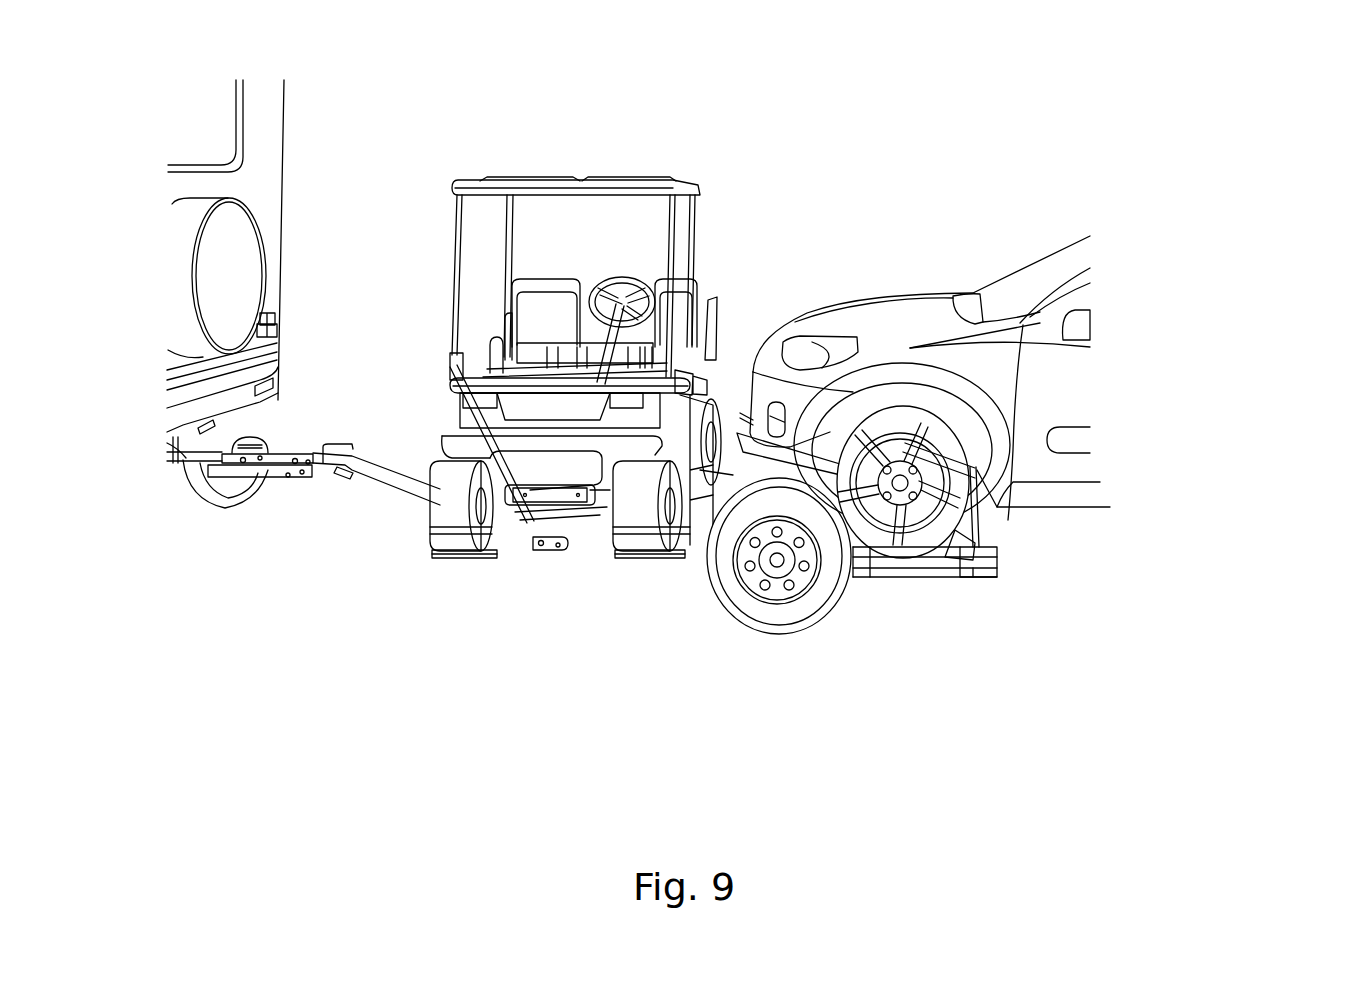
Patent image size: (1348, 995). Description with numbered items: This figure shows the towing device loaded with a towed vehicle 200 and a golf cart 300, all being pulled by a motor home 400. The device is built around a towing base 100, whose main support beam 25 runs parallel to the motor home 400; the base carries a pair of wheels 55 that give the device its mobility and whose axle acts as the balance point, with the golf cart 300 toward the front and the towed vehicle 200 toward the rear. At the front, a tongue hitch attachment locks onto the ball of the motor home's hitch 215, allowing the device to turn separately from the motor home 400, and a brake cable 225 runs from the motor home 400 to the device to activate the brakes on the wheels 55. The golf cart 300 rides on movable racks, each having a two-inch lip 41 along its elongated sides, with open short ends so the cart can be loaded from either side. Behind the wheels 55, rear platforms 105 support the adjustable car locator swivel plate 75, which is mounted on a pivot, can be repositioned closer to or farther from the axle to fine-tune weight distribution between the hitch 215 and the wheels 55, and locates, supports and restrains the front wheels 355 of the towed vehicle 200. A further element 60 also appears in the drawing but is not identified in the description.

The motor home 400 is at (262, 106).
The golf cart 300 is at (579, 193).
The towed vehicle 200 is at (1045, 376).
The main support beam 25 is at (305, 458).
The hitch 215 is at (200, 502).
The brake cable 225 is at (233, 507).
The lip 41 is at (465, 558).
The tongue 60 is at (703, 487).
The wheels 55 is at (777, 634).
The front wheels 355 is at (868, 577).
The rear platforms 105 is at (987, 578).
The adjustable car locator swivel plate 75 is at (932, 577).
The towing base 100 is at (893, 577).